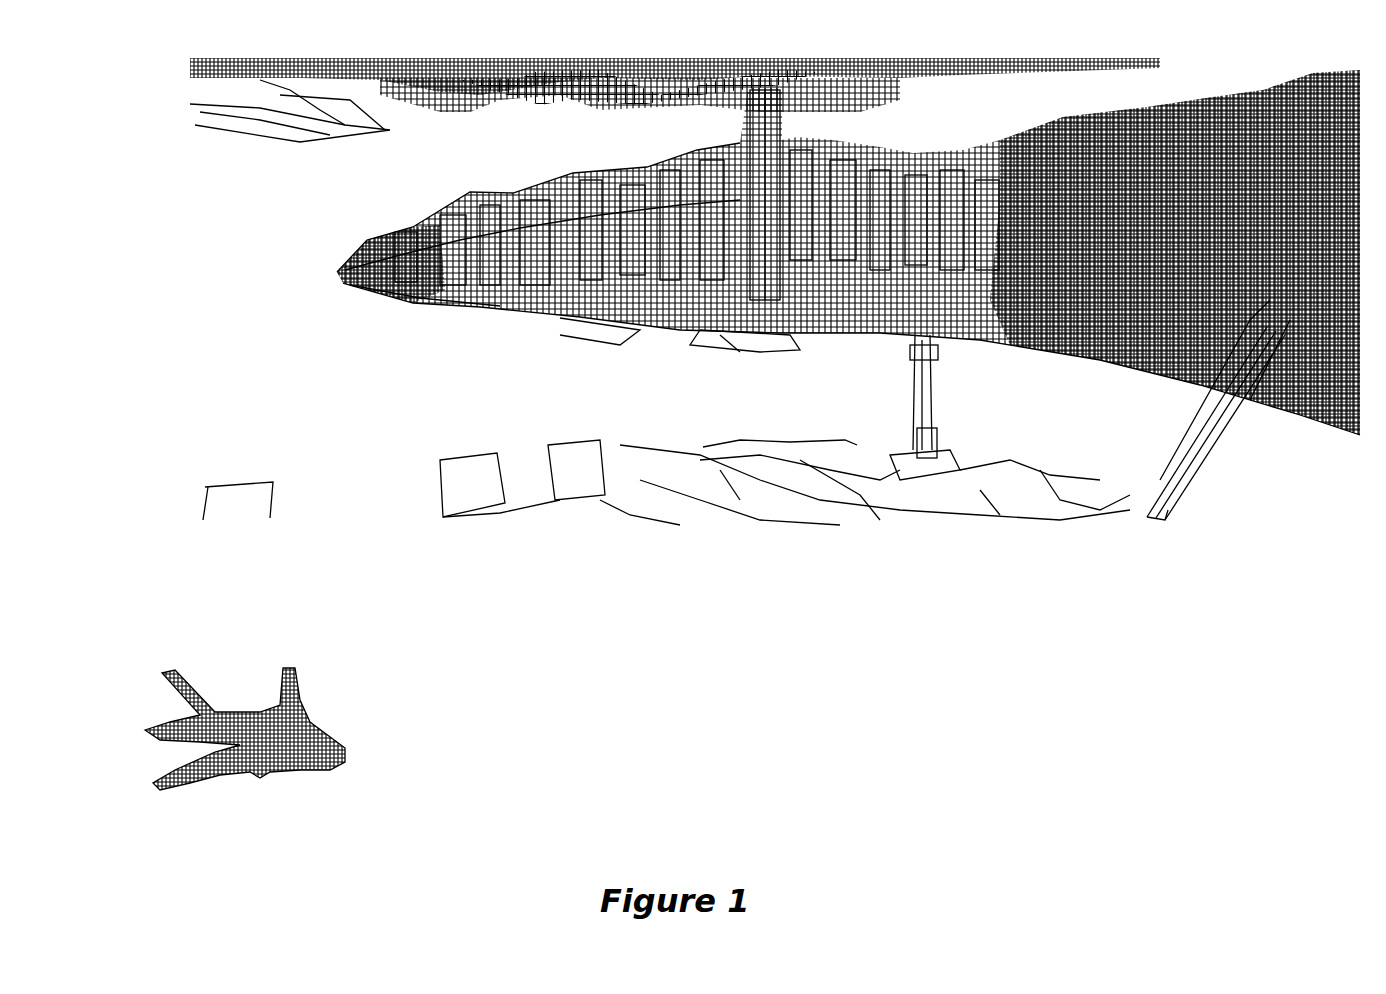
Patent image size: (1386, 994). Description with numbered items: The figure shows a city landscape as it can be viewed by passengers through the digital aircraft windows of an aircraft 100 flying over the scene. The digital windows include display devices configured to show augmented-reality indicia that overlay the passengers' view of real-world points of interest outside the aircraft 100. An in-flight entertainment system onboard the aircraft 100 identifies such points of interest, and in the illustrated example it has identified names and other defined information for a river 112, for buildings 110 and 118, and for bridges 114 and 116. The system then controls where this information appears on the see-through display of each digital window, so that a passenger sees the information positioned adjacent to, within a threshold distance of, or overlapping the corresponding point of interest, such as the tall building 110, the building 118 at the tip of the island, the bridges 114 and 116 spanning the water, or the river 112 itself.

The aircraft 100 is at (299, 726).
The building 110 is at (804, 195).
The river 112 is at (295, 422).
The bridge 114 is at (962, 396).
The bridge 116 is at (1218, 410).
The building 118 is at (382, 254).